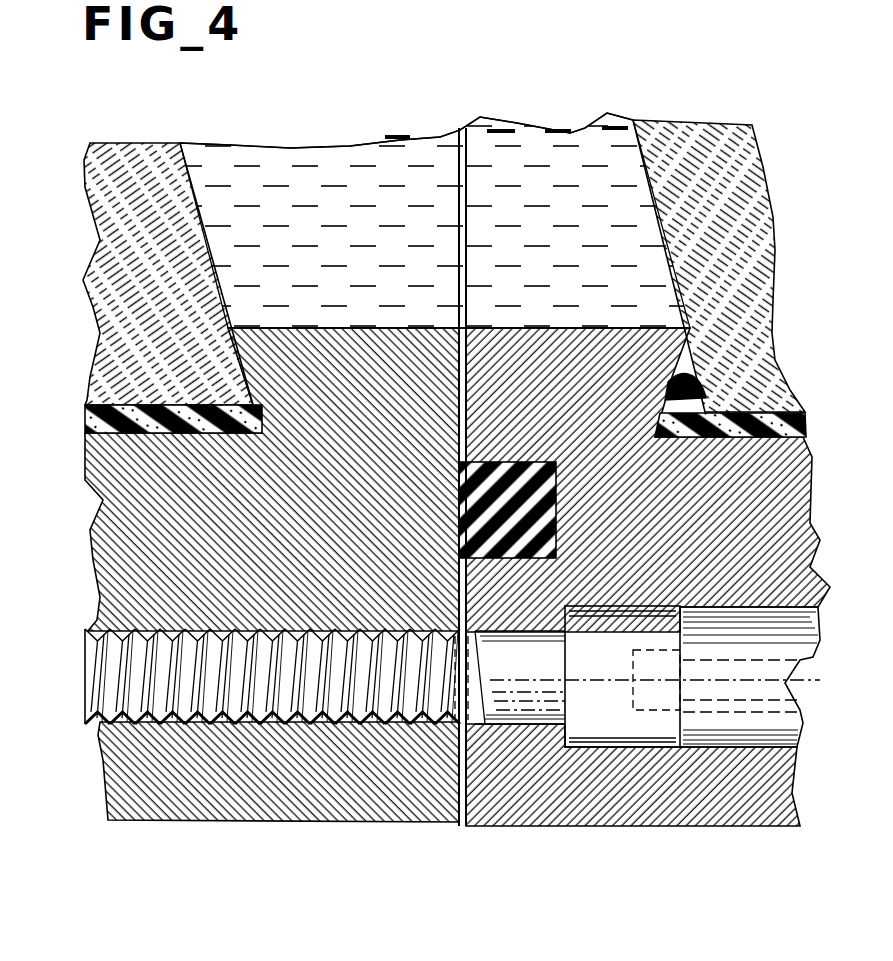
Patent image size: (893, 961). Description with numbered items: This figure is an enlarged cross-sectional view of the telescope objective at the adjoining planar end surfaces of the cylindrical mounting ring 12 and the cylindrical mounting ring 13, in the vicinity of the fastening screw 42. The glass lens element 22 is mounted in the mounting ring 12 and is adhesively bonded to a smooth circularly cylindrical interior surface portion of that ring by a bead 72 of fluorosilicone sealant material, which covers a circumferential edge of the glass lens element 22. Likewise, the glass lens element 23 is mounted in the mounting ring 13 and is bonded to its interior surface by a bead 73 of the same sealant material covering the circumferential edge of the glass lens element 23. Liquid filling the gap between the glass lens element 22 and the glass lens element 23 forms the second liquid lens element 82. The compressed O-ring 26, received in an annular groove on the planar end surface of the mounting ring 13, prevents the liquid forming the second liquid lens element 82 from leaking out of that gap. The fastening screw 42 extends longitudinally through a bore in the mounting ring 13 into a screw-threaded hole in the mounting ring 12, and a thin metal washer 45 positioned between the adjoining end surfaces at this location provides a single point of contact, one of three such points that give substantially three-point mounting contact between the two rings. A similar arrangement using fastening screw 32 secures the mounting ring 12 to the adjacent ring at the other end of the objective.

The mounting ring 12 is at (95, 533).
The mounting ring 13 is at (813, 523).
The glass lens element 22 is at (142, 142).
The glass lens element 23 is at (763, 188).
The O-ring 26 is at (503, 462).
The fastening screw 32 is at (103, 677).
The fastening screw 42 is at (685, 703).
The washer 45 is at (532, 807).
The bead of sealant material 72 is at (84, 420).
The bead of sealant material 73 is at (805, 412).
The second liquid lens element 82 is at (526, 264).